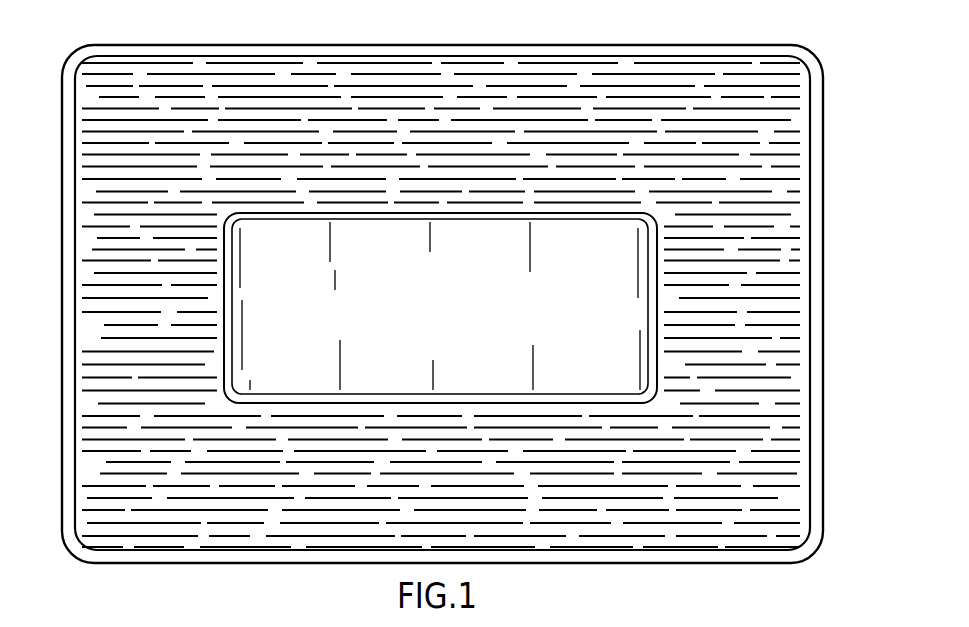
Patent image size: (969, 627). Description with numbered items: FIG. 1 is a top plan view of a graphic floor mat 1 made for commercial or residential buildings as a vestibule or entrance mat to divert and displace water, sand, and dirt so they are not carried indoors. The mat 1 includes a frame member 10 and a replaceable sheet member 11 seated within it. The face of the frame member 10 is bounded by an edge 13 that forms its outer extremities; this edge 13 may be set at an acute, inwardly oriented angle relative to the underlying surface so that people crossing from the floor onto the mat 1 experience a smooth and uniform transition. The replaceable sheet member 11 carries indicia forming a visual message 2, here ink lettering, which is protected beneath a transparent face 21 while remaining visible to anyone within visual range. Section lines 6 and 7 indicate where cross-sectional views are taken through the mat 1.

The mat 1 is at (671, 39).
The visual message 2 is at (582, 262).
The section line 6- 6 is at (33, 503).
The section line 7- 7 is at (33, 293).
The frame member 10 is at (532, 64).
The replaceable sheet member 11 is at (253, 236).
The edge 13 is at (425, 47).
The transparent face 21 is at (268, 382).